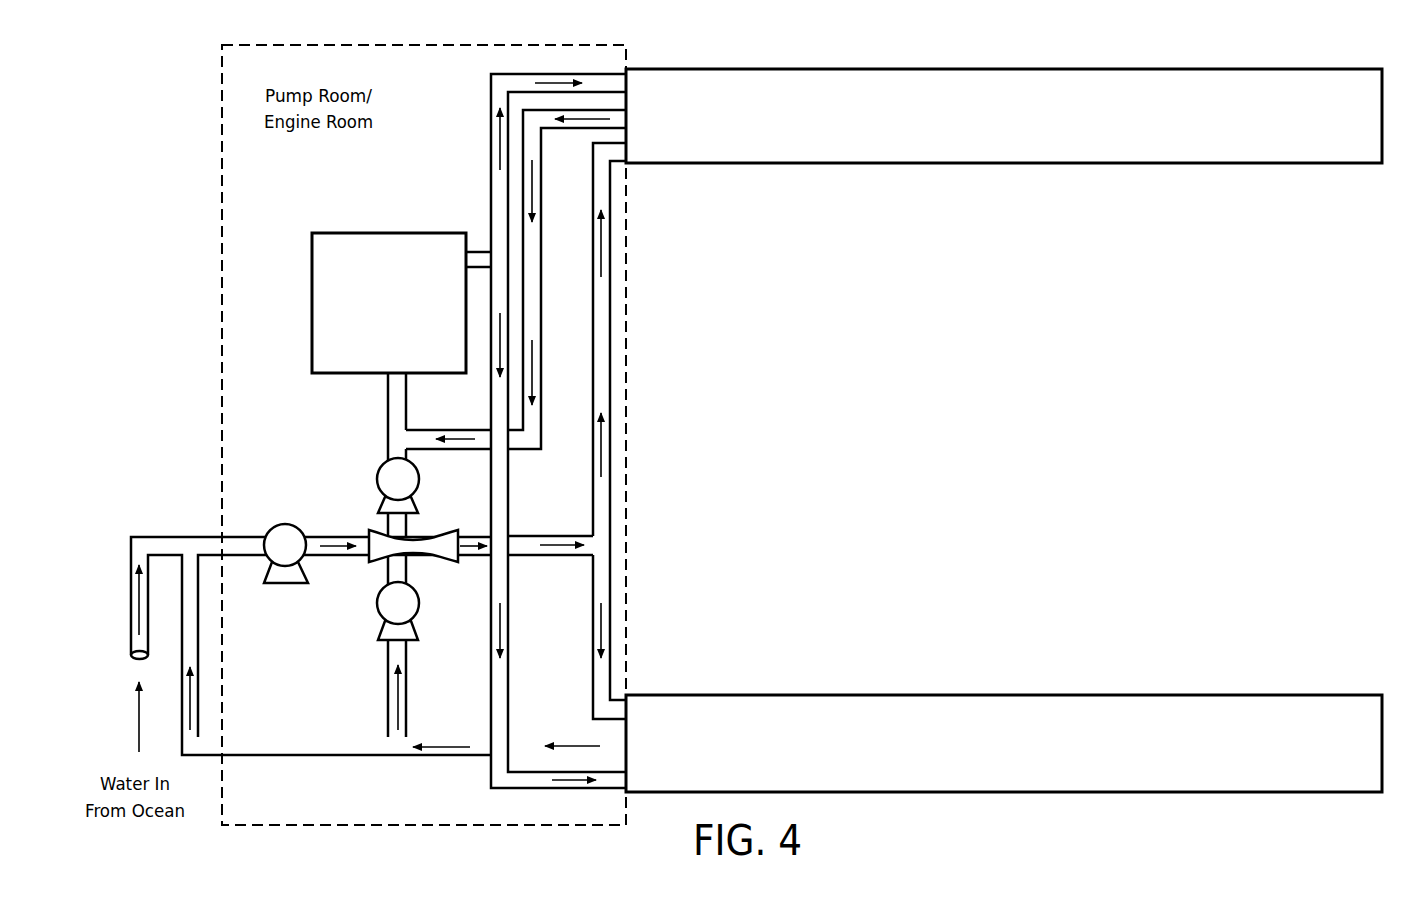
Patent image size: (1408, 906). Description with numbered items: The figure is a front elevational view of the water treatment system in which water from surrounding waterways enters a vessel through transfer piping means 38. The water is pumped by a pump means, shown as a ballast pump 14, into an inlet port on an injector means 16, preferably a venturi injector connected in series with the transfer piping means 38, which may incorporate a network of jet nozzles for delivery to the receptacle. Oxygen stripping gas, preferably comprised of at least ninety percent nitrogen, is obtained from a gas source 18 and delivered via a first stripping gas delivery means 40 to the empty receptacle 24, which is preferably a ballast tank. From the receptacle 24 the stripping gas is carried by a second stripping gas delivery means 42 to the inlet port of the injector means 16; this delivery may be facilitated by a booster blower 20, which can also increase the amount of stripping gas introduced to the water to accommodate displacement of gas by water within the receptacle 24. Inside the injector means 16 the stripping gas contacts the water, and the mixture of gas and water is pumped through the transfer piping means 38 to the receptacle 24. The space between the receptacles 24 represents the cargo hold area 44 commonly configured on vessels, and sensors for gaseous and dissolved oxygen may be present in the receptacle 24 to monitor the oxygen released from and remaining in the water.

The ballast pump 14 is at (283, 530).
The injector means 16 is at (428, 529).
The gas source 18 is at (384, 233).
The booster blower 20 is at (383, 467).
The receptacle 24 is at (1180, 148).
The transfer piping means 38 is at (131, 562).
The first stripping gas delivery means 40 is at (596, 73).
The second stripping gas delivery means 42 is at (467, 432).
The cargo hold area 44 is at (1258, 463).